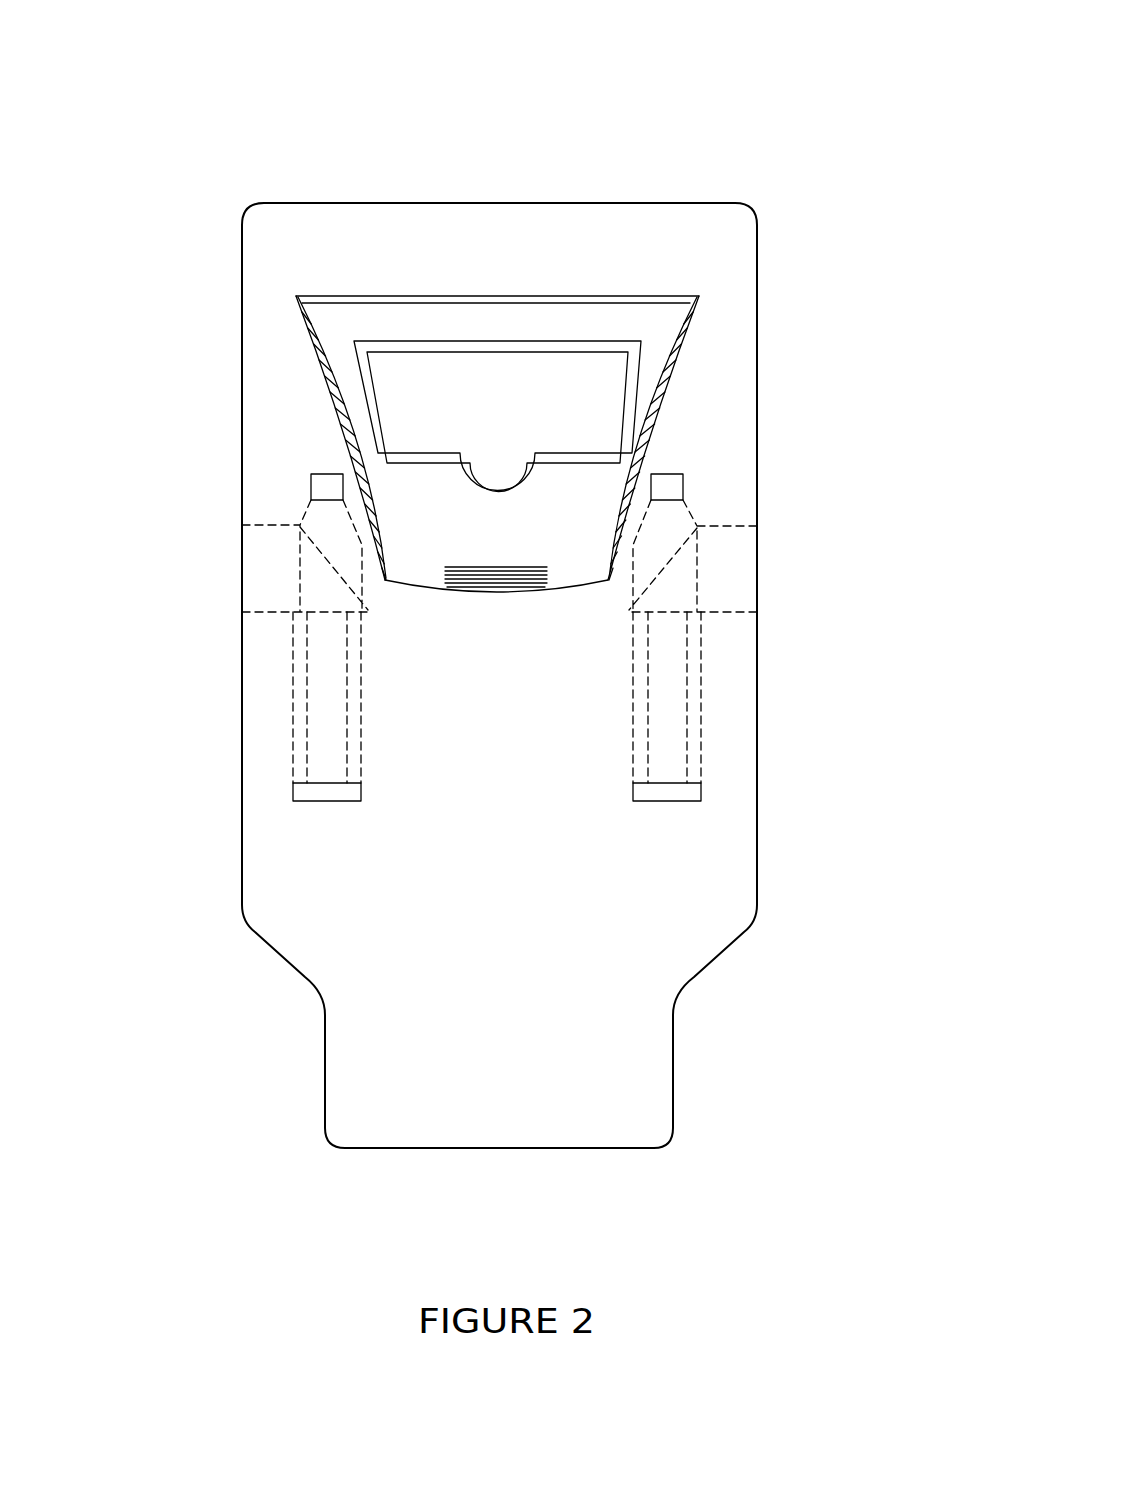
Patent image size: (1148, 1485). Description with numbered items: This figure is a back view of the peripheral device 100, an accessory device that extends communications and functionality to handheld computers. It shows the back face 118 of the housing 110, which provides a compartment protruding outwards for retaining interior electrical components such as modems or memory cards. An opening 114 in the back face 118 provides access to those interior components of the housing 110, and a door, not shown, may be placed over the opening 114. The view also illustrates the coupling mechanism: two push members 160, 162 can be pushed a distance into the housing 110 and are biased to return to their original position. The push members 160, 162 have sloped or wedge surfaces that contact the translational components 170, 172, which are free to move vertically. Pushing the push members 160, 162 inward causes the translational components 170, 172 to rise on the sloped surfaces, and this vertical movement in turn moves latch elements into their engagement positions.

The peripheral device 100 is at (790, 188).
The housing 110 is at (242, 248).
The opening 114 is at (528, 412).
The back face 118 is at (680, 822).
The push member 160 is at (758, 573).
The push member 162 is at (248, 568).
The translational component 170 is at (663, 487).
The translational component 172 is at (330, 488).